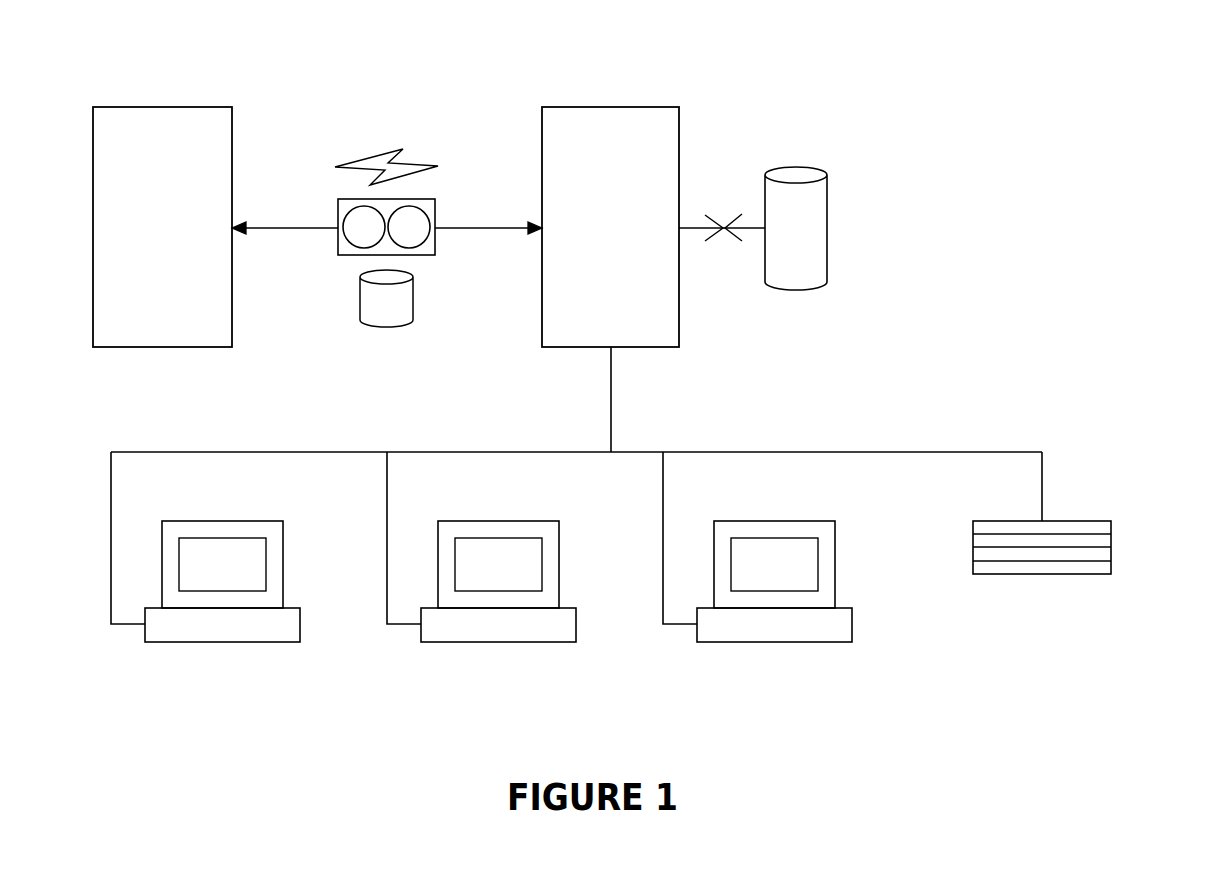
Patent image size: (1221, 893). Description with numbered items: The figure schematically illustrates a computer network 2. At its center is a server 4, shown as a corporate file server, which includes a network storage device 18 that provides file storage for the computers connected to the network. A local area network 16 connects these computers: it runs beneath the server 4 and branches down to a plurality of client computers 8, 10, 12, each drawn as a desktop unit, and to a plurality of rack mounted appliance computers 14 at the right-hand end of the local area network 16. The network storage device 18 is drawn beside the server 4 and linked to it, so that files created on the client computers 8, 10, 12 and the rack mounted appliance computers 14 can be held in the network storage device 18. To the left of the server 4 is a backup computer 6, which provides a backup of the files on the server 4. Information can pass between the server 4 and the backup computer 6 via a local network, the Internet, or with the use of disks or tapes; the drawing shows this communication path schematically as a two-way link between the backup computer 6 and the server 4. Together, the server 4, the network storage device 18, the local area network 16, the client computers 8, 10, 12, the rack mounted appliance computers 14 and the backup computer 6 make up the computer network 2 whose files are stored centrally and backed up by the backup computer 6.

The computer network 2 is at (1082, 50).
The server 4 is at (647, 106).
The backup computer 6 is at (197, 106).
The client computer 8 is at (266, 643).
The client computer 10 is at (543, 643).
The client computer 12 is at (818, 643).
The rack mounted appliance computers 14 is at (1112, 540).
The local area network 16 is at (870, 451).
The network storage device 18 is at (828, 203).